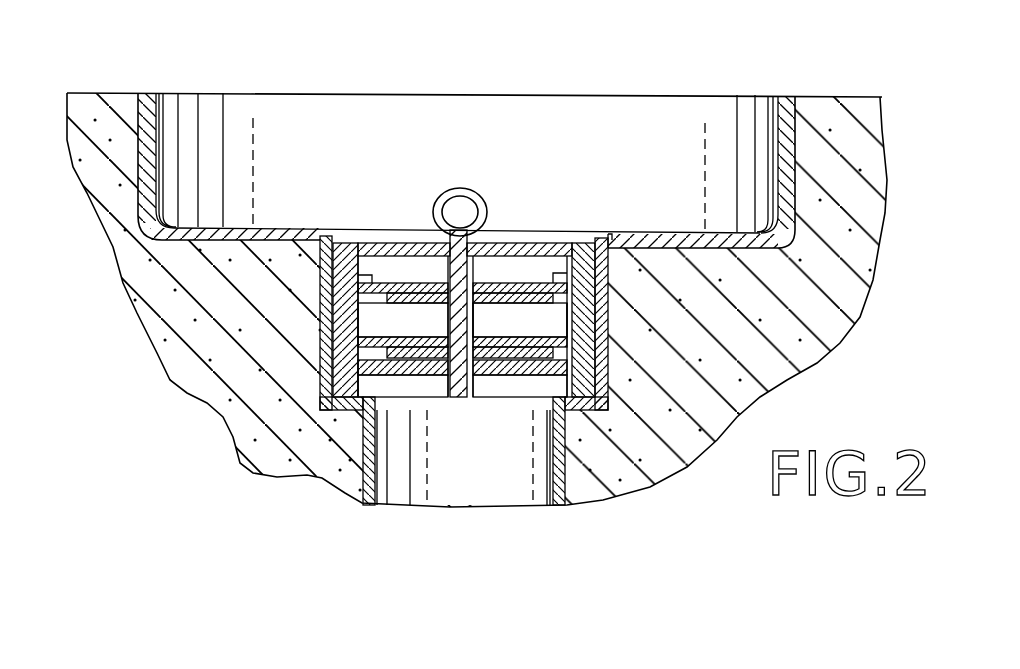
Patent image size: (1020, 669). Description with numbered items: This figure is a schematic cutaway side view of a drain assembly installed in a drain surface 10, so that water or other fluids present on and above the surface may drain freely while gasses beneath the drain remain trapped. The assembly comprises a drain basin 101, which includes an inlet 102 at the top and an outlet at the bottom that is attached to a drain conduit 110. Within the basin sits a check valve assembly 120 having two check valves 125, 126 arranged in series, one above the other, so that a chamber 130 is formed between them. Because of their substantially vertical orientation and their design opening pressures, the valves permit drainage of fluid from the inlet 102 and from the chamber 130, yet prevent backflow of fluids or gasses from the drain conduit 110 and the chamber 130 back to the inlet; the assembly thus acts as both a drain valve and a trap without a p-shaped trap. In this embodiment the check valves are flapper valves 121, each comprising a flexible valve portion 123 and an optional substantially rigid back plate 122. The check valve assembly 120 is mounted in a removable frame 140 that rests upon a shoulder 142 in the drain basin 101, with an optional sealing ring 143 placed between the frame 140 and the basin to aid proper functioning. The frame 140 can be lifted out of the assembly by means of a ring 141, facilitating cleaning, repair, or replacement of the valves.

The drain surface 10 is at (850, 84).
The drain basin 101 is at (616, 149).
The inlet 102 is at (285, 93).
The drain conduit 110 is at (528, 497).
The check valve assembly 120 is at (412, 283).
The flapper valves 121 is at (538, 283).
The back plates 122 is at (320, 296).
The flexible valve portions 123 is at (413, 283).
The check valve 125 is at (495, 283).
The check valve 126 is at (540, 363).
The chamber 130 is at (541, 332).
The frame 140 is at (432, 345).
The ring 141 is at (462, 190).
The shoulder 142 is at (400, 348).
The sealing ring 143 is at (337, 250).